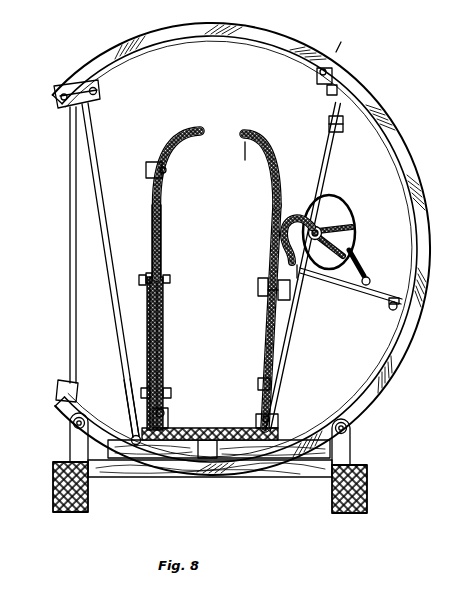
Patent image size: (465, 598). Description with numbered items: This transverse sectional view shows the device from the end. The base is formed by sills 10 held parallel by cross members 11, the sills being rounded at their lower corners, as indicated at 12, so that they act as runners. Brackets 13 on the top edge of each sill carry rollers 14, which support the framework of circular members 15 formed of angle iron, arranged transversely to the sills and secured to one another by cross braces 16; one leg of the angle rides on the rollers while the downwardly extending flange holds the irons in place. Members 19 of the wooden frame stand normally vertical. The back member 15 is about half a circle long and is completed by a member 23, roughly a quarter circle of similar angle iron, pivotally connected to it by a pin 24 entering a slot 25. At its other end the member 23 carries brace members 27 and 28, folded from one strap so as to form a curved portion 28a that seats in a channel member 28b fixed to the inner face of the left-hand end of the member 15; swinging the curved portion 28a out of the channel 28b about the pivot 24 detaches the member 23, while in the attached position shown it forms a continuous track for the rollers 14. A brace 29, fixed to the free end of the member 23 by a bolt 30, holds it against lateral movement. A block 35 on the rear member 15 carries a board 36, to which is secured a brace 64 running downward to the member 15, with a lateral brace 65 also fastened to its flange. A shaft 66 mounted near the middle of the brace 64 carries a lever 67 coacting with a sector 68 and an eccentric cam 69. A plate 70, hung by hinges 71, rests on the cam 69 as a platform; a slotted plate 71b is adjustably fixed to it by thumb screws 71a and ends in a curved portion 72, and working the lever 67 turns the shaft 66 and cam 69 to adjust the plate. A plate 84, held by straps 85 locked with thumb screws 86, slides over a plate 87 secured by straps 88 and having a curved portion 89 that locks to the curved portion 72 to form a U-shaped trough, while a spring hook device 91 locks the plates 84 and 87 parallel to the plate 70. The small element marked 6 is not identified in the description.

The clamp block 6 is at (147, 180).
The sills 10 is at (89, 503).
The cross members 11 is at (121, 479).
The rounded lower end corners 12 is at (136, 437).
The brackets 13 is at (72, 447).
The roller 14 is at (72, 424).
The circular members 15 is at (425, 238).
The cross braces 16 is at (329, 125).
The frame members 19 is at (153, 224).
The member 23 is at (275, 47).
The pin 24 is at (316, 80).
The slot 25 is at (326, 90).
The brace member 27 is at (77, 322).
The brace member 28 is at (96, 186).
The curved portion 28a is at (108, 397).
The channel member 28b is at (60, 388).
The brace 29 is at (63, 93).
The bolt 30 is at (58, 103).
The block 35 is at (182, 460).
The board 36 is at (230, 428).
The brace 64 is at (325, 188).
The brace 65 is at (332, 282).
The shaft 66 is at (318, 228).
The lever 67 is at (357, 262).
The sector 68 is at (356, 226).
The cam 69 is at (293, 224).
The plate 70 is at (262, 378).
The hinges 71 is at (258, 416).
The thumb screws 71a is at (290, 301).
The plate 71b is at (268, 246).
The curved portion 72 is at (273, 173).
The plate 84 is at (161, 346).
The straps 85 is at (148, 276).
The thumb screws 86 is at (140, 280).
The plate 87 is at (164, 234).
The straps 88 is at (164, 299).
The curved portion 89 is at (166, 170).
The spring hook device 91 is at (167, 411).